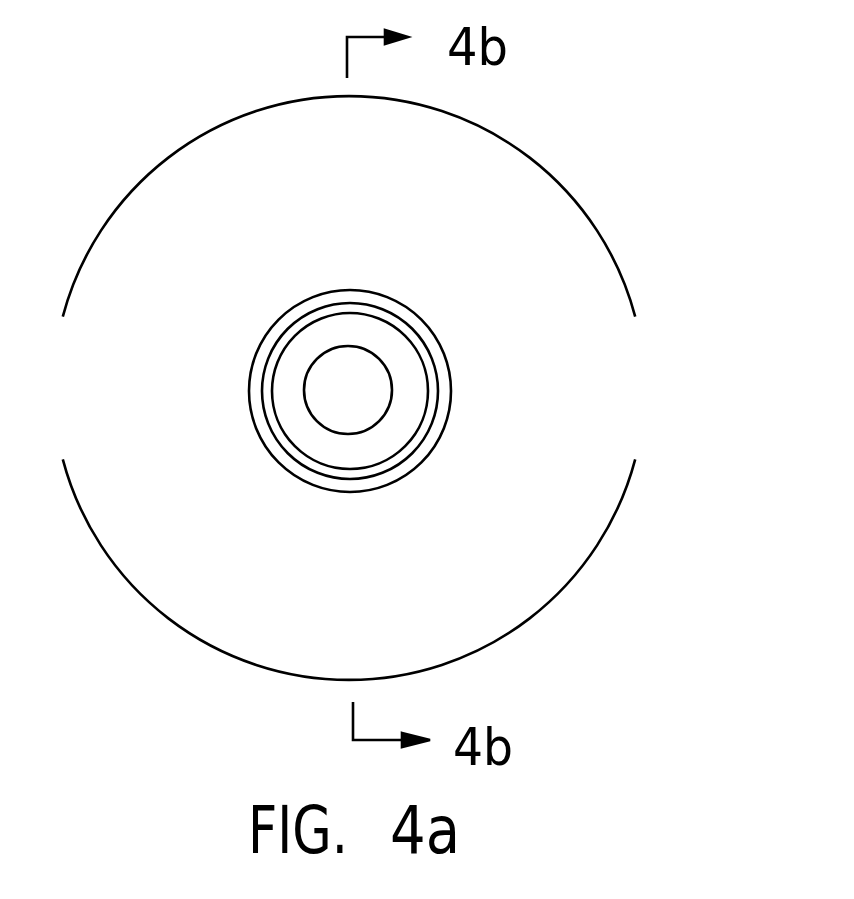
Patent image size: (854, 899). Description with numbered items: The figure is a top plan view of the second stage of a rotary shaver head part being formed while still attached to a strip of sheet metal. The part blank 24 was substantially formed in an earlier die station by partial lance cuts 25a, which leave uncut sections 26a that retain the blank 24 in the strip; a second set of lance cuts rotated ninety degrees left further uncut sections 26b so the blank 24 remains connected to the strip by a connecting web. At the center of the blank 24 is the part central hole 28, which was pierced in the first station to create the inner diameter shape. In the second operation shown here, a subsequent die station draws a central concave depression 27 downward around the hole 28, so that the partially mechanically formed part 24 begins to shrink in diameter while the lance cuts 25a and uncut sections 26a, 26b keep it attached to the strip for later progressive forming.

The flat blank 24 is at (414, 374).
The partial lance cuts 25a is at (535, 163).
The uncut sections 26a is at (97, 384).
The uncut sections 26b is at (322, 87).
The central concave depression 27 is at (407, 467).
The part central hole 28 is at (345, 348).